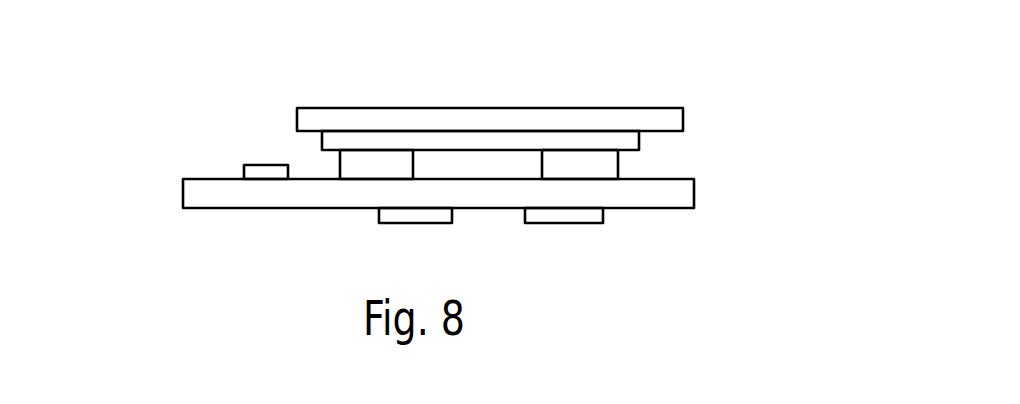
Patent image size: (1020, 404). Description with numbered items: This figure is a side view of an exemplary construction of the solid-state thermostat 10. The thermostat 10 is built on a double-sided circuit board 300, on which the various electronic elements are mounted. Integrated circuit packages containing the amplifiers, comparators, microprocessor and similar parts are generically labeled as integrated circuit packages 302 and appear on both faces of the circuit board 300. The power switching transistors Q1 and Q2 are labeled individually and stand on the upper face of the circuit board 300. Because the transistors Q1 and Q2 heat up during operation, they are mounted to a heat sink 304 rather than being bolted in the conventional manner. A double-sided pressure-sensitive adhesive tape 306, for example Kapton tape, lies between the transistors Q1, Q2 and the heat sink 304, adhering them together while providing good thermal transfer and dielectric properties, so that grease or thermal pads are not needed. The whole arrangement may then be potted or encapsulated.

The thermostat 10 is at (216, 90).
The double-sided circuit board 300 is at (188, 197).
The integrated circuit packages 302 is at (252, 163).
The heat sink 304 is at (468, 120).
The double-sided pressure-sensitive adhesive tape 306 is at (626, 148).
The power switching transistor Q1 is at (352, 167).
The power switching transistor Q2 is at (606, 166).